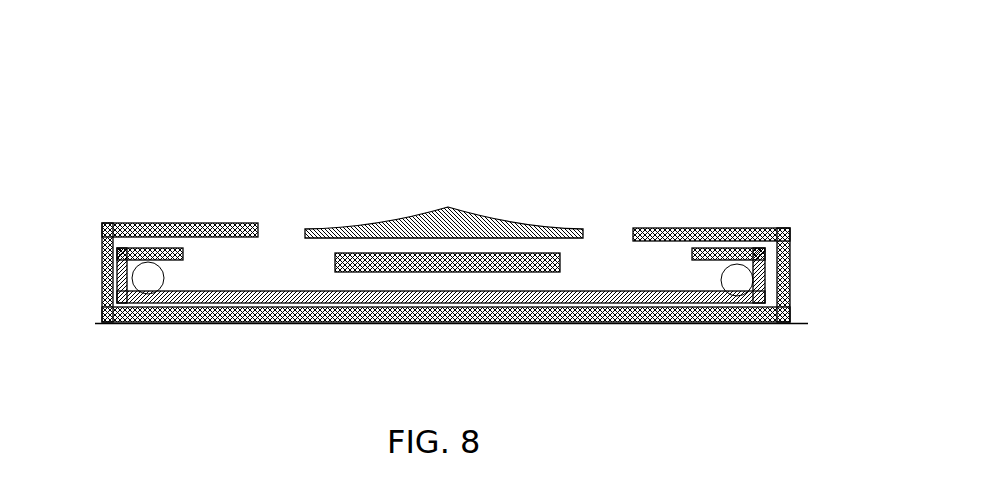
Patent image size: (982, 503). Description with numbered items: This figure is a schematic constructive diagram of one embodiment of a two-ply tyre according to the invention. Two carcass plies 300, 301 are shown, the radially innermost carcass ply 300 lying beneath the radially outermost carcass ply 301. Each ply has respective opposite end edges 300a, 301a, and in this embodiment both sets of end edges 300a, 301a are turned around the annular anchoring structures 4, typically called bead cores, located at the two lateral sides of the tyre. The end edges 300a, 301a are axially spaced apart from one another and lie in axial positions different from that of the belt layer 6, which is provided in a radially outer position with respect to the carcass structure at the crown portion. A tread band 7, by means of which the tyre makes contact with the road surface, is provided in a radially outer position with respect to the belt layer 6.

The carcass ply 300 is at (290, 322).
The end edges of carcass ply 300a is at (221, 212).
The carcass ply 301 is at (290, 291).
The end edges of carcass ply 301a is at (158, 240).
The tread band 7 is at (448, 230).
The belt layer 6 is at (560, 265).
The annular anchoring structures 4 is at (150, 280).